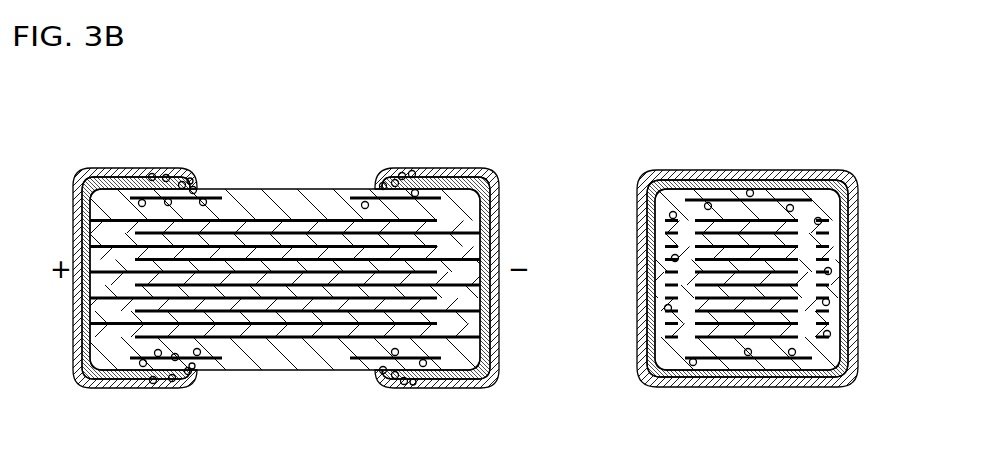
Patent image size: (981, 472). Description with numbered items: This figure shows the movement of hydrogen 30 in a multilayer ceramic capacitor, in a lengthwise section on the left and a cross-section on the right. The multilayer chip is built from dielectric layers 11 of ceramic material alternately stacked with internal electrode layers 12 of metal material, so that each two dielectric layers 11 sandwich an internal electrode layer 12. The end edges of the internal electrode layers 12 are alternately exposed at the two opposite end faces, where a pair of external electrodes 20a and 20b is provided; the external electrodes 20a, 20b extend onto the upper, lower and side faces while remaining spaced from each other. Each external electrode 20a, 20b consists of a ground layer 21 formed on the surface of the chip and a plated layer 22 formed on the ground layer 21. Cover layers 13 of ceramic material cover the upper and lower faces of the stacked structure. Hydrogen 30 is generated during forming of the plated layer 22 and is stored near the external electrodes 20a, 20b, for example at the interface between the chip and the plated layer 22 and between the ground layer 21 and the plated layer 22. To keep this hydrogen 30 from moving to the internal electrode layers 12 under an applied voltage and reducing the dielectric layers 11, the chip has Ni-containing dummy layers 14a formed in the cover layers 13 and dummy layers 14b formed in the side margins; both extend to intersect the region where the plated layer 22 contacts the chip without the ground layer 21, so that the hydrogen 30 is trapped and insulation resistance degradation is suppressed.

The dielectric layer 11 is at (293, 303).
The internal electrode layer 12 is at (352, 300).
The cover layer 13 is at (290, 187).
The dummy layer 14a is at (220, 187).
The dummy layer 14b is at (668, 252).
The external electrode 20a is at (455, 232).
The external electrode 20b is at (474, 225).
The ground layer 21 is at (92, 176).
The plated layer 22 is at (138, 177).
The hydrogen 30 is at (190, 168).